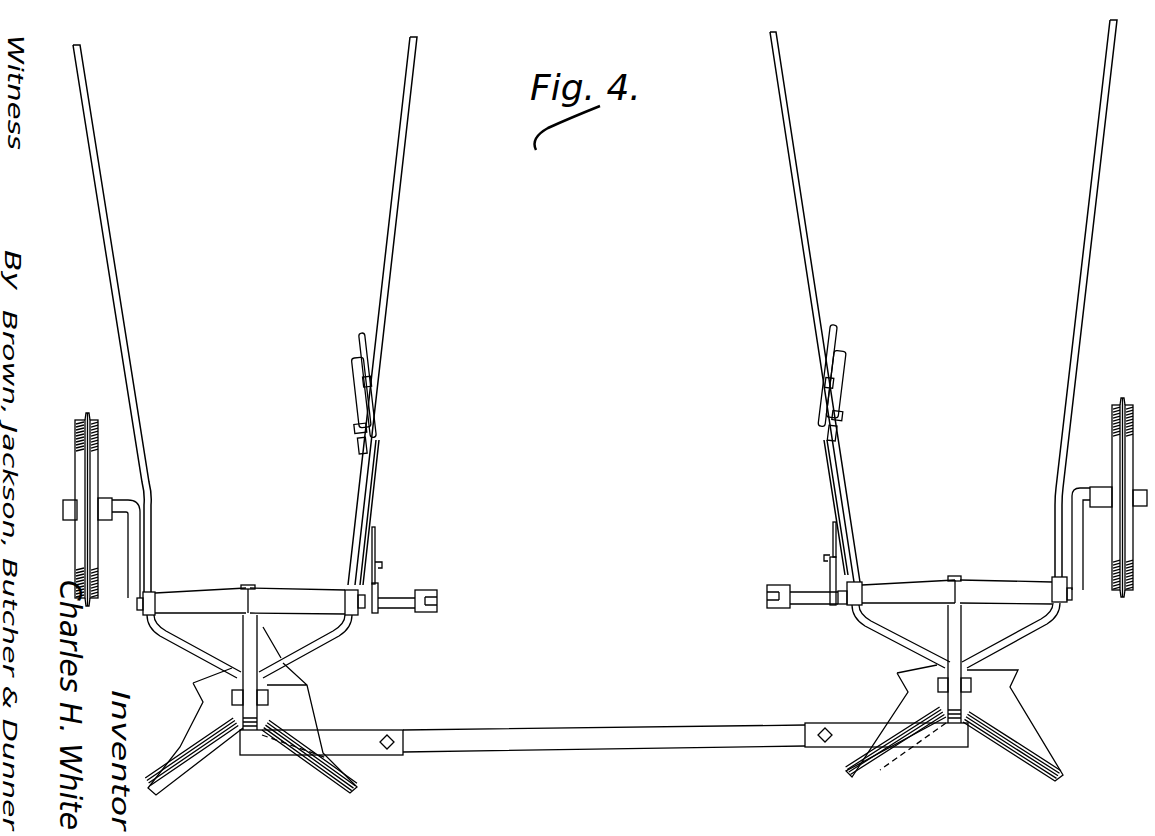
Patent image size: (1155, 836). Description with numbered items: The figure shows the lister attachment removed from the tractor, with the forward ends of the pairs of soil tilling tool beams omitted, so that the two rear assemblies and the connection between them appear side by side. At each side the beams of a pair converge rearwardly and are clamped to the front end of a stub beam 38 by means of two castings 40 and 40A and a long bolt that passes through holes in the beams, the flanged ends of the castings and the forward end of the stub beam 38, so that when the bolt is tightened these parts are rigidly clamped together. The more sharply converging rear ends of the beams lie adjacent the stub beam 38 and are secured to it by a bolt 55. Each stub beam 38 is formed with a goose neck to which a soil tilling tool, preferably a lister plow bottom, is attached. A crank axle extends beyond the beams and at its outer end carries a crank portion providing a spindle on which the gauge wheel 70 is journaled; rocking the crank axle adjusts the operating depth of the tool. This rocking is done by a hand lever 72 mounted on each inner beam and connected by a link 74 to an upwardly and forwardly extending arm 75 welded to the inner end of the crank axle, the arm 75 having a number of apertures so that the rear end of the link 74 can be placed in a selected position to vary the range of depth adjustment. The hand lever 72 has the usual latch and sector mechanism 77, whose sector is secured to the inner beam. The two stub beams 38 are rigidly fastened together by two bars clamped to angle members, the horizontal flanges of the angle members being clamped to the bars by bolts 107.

The stub beam 38 is at (247, 643).
The casting 40 is at (928, 553).
The casting 40A is at (1000, 552).
The bolt 55 is at (297, 700).
The gauge wheel 70 is at (82, 462).
The hand lever 72 is at (373, 345).
The link 74 is at (356, 378).
The arm 75 is at (378, 569).
The latch and sector mechanism 77 is at (372, 385).
The bolt 107 is at (388, 734).